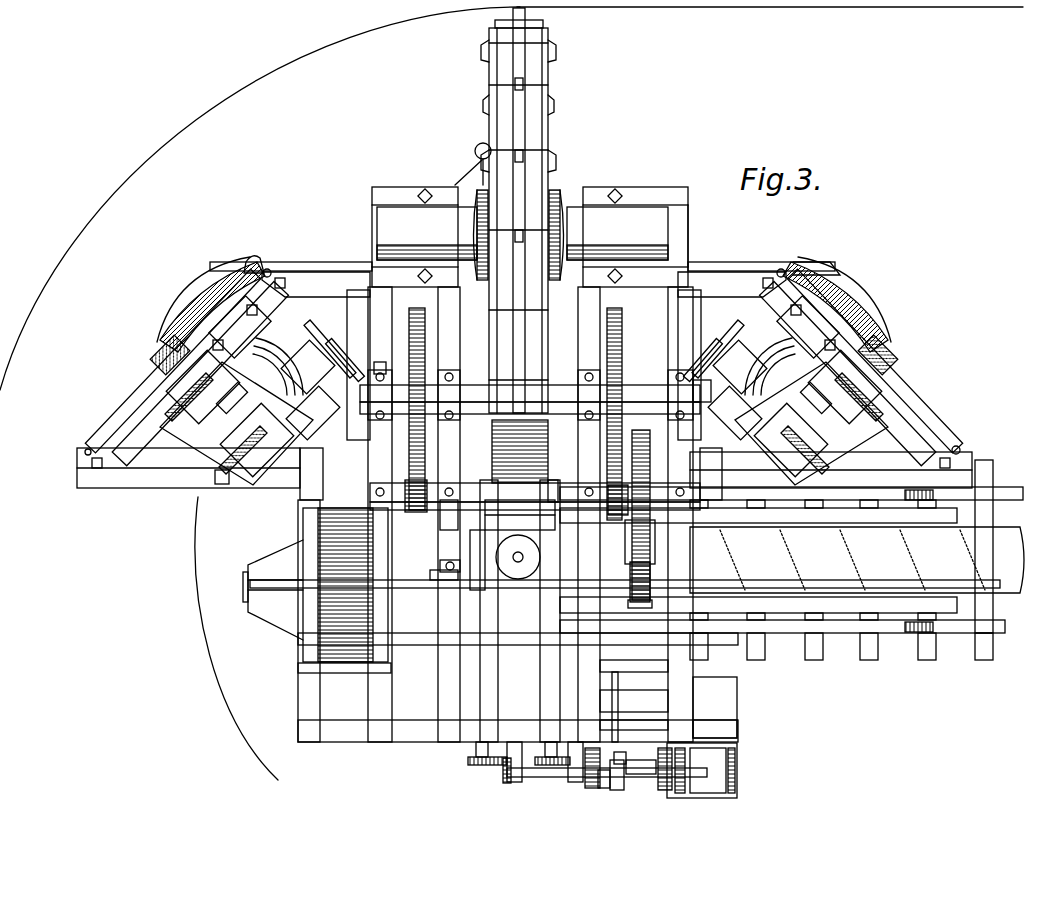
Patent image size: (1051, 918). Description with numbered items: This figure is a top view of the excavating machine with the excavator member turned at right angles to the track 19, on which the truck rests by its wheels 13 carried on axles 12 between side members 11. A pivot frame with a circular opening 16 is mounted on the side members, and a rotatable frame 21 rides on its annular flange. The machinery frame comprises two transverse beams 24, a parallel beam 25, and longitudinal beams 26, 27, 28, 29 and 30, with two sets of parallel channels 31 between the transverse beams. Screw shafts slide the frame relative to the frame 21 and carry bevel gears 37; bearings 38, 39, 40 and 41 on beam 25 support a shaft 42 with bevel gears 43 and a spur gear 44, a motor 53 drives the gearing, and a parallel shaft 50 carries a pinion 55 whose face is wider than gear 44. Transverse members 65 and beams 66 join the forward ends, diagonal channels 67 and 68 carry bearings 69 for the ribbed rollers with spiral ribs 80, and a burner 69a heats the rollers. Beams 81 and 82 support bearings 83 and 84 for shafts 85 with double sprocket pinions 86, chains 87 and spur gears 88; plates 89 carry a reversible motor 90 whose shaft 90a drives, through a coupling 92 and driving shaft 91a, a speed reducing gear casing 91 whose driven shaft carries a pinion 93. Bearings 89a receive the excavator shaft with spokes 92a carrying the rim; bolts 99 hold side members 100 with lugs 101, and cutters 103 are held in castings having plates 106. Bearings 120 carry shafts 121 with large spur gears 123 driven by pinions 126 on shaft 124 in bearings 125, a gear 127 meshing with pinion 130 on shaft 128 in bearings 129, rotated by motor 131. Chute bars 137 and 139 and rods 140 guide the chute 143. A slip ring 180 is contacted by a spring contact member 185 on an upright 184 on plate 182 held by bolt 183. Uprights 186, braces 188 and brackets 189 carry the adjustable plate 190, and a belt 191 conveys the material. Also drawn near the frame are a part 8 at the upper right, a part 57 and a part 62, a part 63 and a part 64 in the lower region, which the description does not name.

The bracket 8 is at (826, 262).
The side member 11 is at (862, 590).
The axle 12 is at (920, 600).
The wheel 13 is at (905, 502).
The circular opening 16 is at (518, 563).
The track 19 is at (788, 628).
The frame 21 is at (471, 560).
The transverse beam 24 is at (831, 469).
The beam 25 is at (342, 742).
The longitudinal beam 26 is at (298, 696).
The longitudinal beam 27 is at (370, 696).
The longitudinal beam 28 is at (440, 696).
The longitudinal beam 29 is at (634, 707).
The longitudinal beam 30 is at (668, 660).
The parallel channel 31 is at (540, 666).
The bevel gear 37 is at (470, 762).
The bearing 38 is at (582, 740).
The bearing 39 is at (634, 729).
The bearing 40 is at (655, 776).
The bearing 41 is at (514, 742).
The shaft 42 is at (535, 777).
The bevel gear 43 is at (503, 775).
The spur gear 44 is at (599, 787).
The shaft 50 is at (635, 759).
The motor 53 is at (728, 770).
The pinion 55 is at (599, 765).
The hub 57 is at (619, 782).
The cross piece 62 is at (612, 686).
The block 63 is at (715, 731).
The cross bar 64 is at (518, 639).
The transverse member 65 is at (330, 270).
The beam 66 is at (350, 312).
The channel 67 is at (524, 374).
The diagonal channel 68 is at (512, 474).
The bearing 69 is at (693, 365).
The burner 69a is at (330, 349).
The spiral rib 80 is at (535, 351).
The beam 81 is at (82, 475).
The beam 82 is at (385, 380).
The bearing 83 is at (524, 327).
The bearing 84 is at (524, 413).
The shaft 85 is at (524, 367).
The double sprocket pinion 86 is at (523, 359).
The chain 87 is at (526, 359).
The spur gear 88 is at (180, 322).
The plate 89 is at (84, 450).
The bearing 89a is at (522, 233).
The reversible motor 90 is at (256, 440).
The motor shaft 90a is at (690, 243).
The speed reducing gear casing 91 is at (202, 387).
The driving shaft 91a is at (570, 197).
The coupling 92 is at (524, 423).
The spoke 92a is at (522, 455).
The pinion 93 is at (155, 360).
The bolt 99 is at (791, 440).
The side member 100 is at (549, 128).
The lug 101 is at (556, 104).
The cutter 103 is at (549, 80).
The plate 106 is at (556, 44).
The bearing 120 is at (452, 388).
The shaft 121 is at (632, 380).
The large spur gear 123 is at (627, 312).
The shaft 124 is at (420, 512).
The bearing 125 is at (455, 490).
The pinion 126 is at (400, 510).
The gear 127 is at (652, 546).
The shaft 128 is at (652, 580).
The bearing 129 is at (436, 585).
The pinion 130 is at (708, 556).
The motor 131 is at (315, 585).
The transverse bar 137 is at (522, 505).
The transverse bar 139 is at (518, 557).
The rod 140 is at (560, 480).
The chute 143 is at (520, 451).
The slip ring 180 is at (478, 225).
The plate 182 is at (450, 165).
The bolt 183 is at (418, 192).
The upright 184 is at (480, 160).
The spring contact member 185 is at (478, 150).
The upright member 186 is at (250, 260).
The inclined brace member 188 is at (125, 420).
The bracket 189 is at (960, 452).
The plate 190 is at (270, 268).
The belt 191 is at (857, 560).